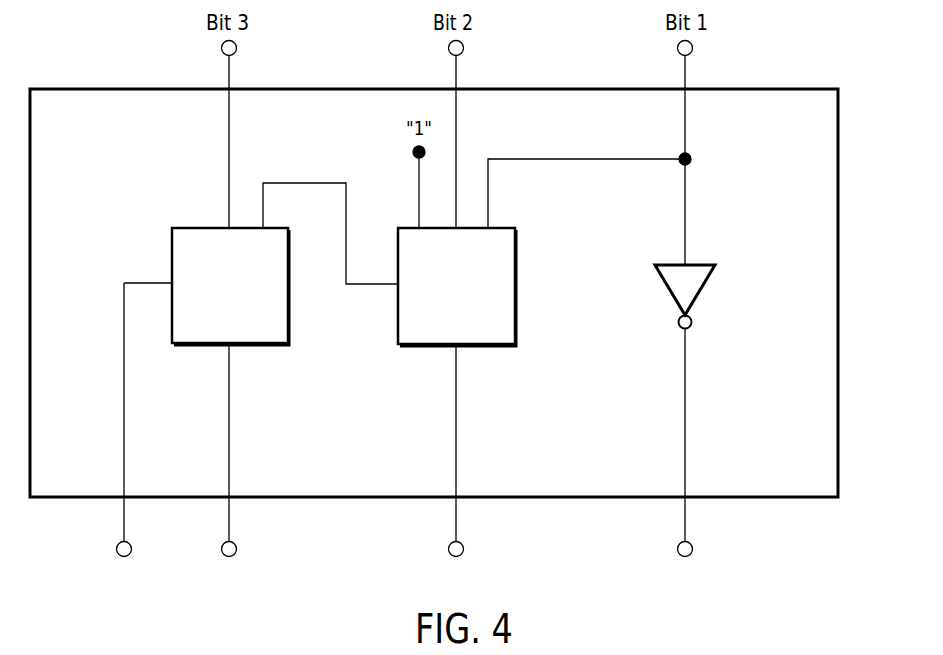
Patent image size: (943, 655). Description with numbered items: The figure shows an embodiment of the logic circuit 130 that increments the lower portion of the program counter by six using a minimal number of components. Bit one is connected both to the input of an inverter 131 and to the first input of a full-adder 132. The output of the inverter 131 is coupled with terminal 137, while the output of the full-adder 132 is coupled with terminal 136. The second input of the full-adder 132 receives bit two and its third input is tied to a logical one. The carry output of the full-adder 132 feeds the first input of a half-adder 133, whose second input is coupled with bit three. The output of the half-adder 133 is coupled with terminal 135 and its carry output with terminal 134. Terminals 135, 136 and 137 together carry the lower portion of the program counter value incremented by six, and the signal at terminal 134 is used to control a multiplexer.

The logic circuit 130 is at (838, 247).
The inverter 131 is at (703, 296).
The full-adder 132 is at (516, 273).
The half-adder 133 is at (255, 346).
The terminal 134 is at (116, 547).
The terminal 135 is at (237, 547).
The terminal 136 is at (465, 549).
The terminal 137 is at (694, 549).